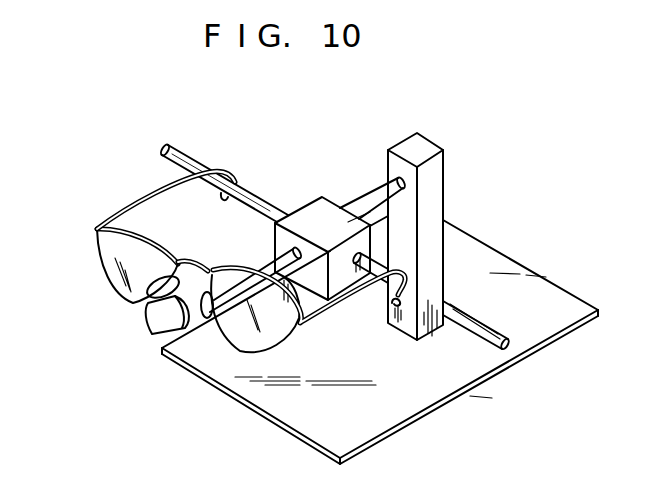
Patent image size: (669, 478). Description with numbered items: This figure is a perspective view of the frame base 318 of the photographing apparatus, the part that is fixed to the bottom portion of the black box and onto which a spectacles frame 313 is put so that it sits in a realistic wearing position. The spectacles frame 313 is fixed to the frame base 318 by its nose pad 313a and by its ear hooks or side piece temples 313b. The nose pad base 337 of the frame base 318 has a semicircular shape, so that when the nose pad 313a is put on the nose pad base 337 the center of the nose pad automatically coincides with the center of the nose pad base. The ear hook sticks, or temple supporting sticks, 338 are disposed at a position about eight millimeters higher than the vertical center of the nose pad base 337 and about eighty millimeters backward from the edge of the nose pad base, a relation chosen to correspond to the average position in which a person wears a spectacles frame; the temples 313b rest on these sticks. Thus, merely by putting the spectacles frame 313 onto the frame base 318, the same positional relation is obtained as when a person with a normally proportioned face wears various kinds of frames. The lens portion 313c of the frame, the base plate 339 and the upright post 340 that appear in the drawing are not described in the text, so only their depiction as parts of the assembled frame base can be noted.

The spectacles frame 313 is at (98, 229).
The nose pad 313a is at (181, 355).
The ear hooks or side piece temples 313b is at (223, 171).
The lens of spectacle frame 313c is at (223, 346).
The frame base 318 is at (457, 218).
The nose pad base 337 is at (163, 312).
The ear hook sticks (temple supporting sticks) 338 is at (163, 153).
The base plate 339 is at (424, 399).
The support post 340 is at (444, 173).